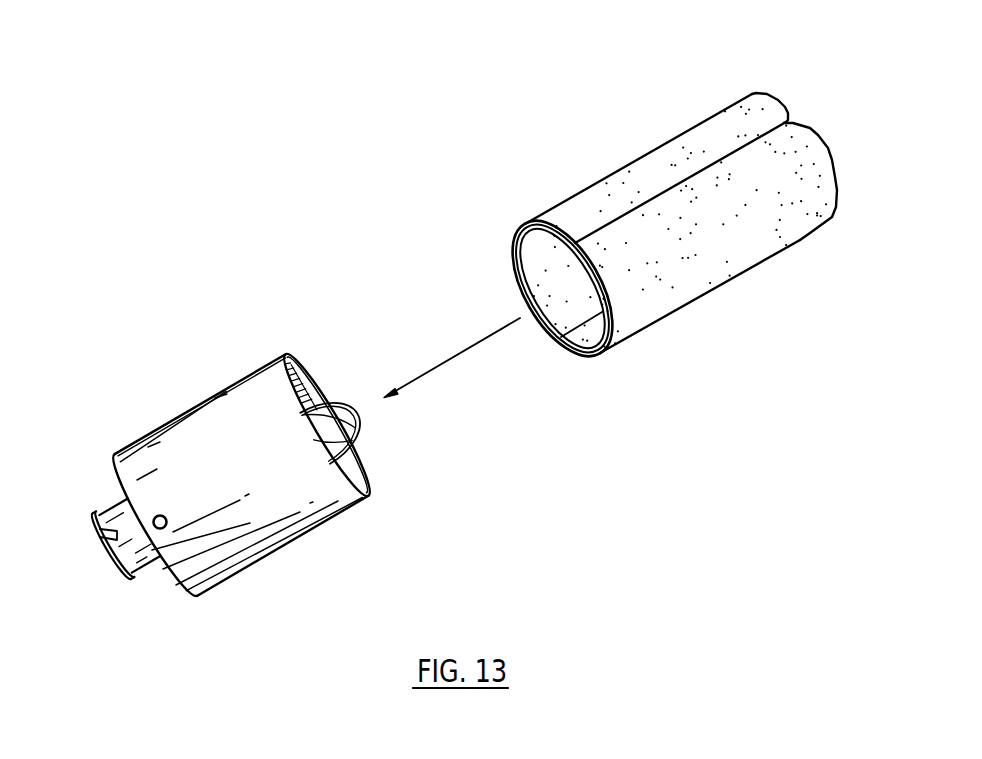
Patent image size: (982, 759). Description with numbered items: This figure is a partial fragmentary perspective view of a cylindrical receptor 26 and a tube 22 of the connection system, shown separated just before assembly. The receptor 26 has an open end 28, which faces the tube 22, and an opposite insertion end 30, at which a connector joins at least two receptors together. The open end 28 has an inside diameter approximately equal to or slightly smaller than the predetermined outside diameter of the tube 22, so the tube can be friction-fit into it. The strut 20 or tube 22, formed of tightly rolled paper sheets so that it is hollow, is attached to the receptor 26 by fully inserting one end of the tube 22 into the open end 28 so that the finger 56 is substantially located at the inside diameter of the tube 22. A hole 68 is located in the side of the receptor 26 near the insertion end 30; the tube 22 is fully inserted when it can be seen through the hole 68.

The strut 20 is at (664, 229).
The tube 22 is at (562, 229).
The cylindrical receptor 26 is at (148, 380).
The open end 28 is at (275, 373).
The insertion end 30 is at (120, 485).
The finger 56 is at (343, 397).
The hole 68 is at (163, 514).